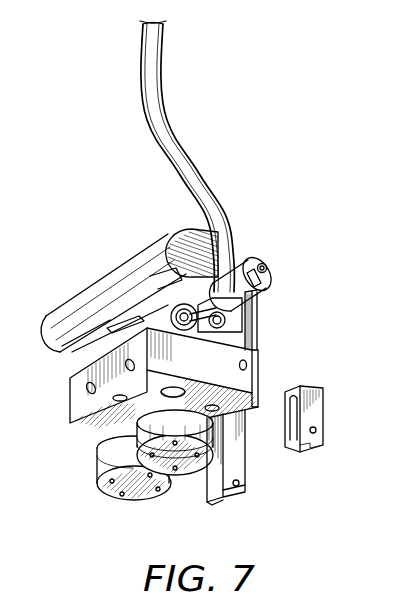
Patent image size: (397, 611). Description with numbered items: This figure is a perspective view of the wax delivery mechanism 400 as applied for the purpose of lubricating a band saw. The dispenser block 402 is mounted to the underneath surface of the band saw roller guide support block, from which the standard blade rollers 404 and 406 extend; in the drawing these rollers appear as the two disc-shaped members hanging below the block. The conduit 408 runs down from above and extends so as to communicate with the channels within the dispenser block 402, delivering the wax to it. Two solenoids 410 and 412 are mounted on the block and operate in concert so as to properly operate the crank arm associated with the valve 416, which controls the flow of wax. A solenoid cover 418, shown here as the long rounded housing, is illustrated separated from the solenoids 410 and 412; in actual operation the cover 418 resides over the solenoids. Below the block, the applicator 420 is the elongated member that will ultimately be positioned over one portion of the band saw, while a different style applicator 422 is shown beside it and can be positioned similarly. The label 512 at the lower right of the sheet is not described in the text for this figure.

The delivery mechanism 400 is at (133, 234).
The dispenser block 402 is at (72, 403).
The blade roller 404 is at (106, 492).
The blade roller 406 is at (193, 478).
The conduit 408 is at (170, 142).
The solenoid 410 is at (251, 262).
The solenoid 412 is at (178, 283).
The valve 416 is at (225, 322).
The solenoid cover 418 is at (85, 297).
The applicator 420 is at (240, 457).
The applicator 422 is at (320, 414).
The reference label 512 is at (396, 550).